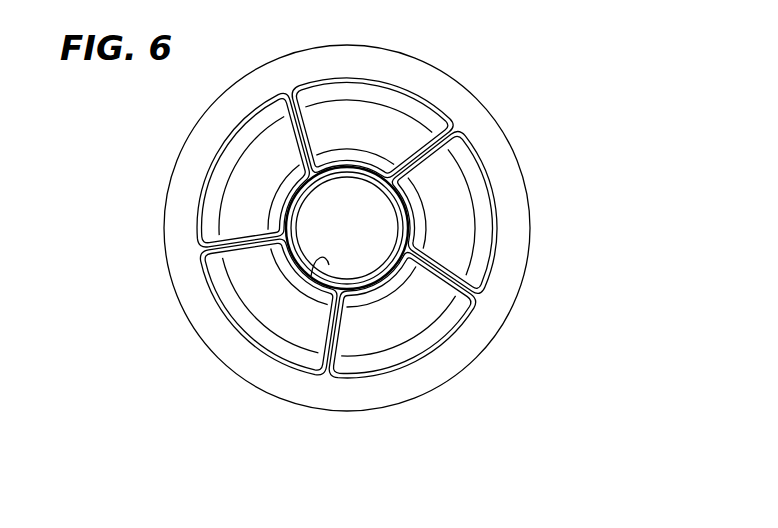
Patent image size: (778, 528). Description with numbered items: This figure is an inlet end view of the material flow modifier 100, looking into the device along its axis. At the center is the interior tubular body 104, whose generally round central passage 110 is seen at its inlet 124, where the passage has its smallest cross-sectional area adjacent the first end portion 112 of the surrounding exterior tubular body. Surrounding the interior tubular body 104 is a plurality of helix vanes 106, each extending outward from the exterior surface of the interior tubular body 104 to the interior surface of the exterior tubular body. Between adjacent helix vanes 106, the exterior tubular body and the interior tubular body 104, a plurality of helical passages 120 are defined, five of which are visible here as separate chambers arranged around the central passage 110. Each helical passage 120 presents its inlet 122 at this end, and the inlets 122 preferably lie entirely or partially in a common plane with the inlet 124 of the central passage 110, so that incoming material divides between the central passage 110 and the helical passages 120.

The material flow modifier 100 is at (513, 92).
The interior tubular body 104 is at (402, 230).
The helix vanes 106 is at (293, 138).
The central passage of the interior tubular body 110 is at (347, 228).
The first end portion of the exterior tubular body 112 is at (498, 190).
The helical passages 120 is at (268, 313).
The inlet of the helical passage 122 is at (429, 332).
The inlet of the central passage of the interior tubular body 124 is at (329, 265).